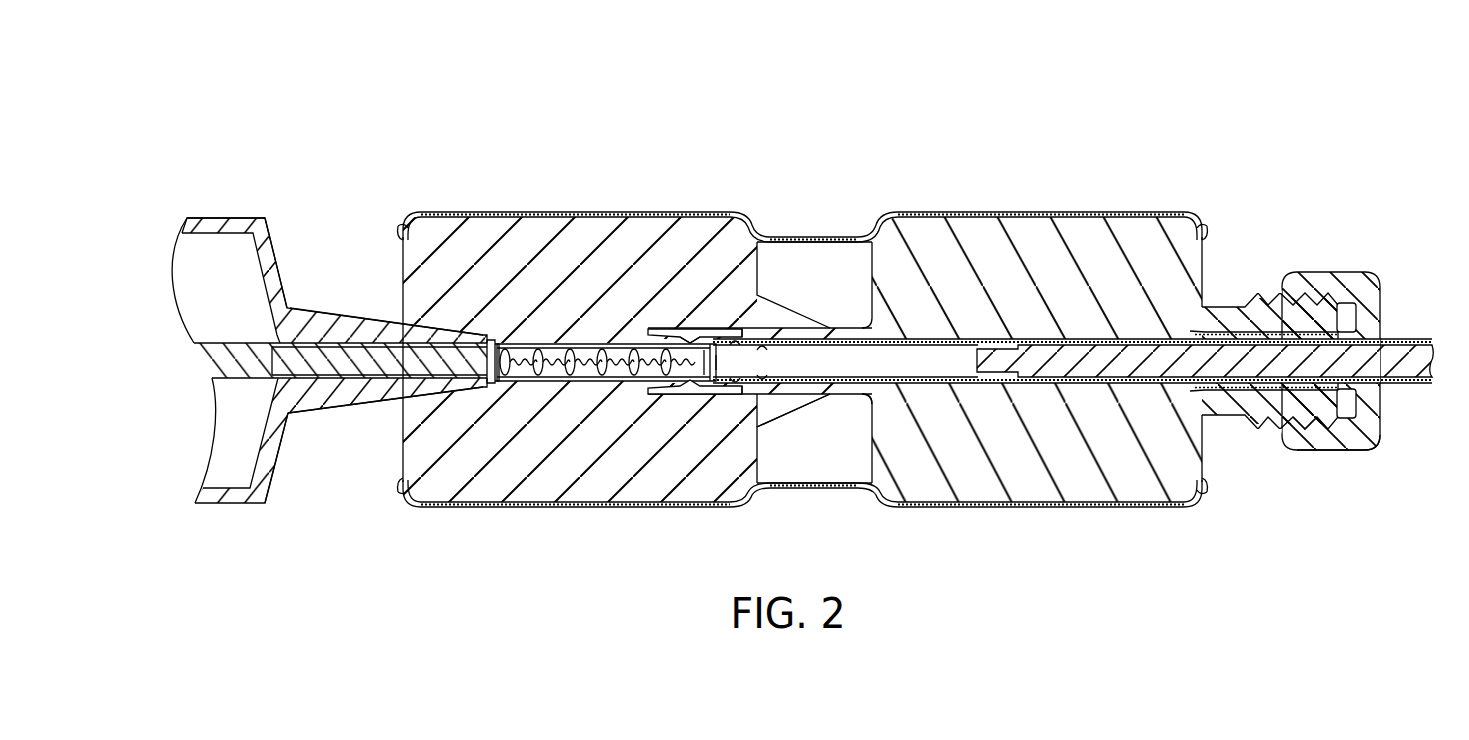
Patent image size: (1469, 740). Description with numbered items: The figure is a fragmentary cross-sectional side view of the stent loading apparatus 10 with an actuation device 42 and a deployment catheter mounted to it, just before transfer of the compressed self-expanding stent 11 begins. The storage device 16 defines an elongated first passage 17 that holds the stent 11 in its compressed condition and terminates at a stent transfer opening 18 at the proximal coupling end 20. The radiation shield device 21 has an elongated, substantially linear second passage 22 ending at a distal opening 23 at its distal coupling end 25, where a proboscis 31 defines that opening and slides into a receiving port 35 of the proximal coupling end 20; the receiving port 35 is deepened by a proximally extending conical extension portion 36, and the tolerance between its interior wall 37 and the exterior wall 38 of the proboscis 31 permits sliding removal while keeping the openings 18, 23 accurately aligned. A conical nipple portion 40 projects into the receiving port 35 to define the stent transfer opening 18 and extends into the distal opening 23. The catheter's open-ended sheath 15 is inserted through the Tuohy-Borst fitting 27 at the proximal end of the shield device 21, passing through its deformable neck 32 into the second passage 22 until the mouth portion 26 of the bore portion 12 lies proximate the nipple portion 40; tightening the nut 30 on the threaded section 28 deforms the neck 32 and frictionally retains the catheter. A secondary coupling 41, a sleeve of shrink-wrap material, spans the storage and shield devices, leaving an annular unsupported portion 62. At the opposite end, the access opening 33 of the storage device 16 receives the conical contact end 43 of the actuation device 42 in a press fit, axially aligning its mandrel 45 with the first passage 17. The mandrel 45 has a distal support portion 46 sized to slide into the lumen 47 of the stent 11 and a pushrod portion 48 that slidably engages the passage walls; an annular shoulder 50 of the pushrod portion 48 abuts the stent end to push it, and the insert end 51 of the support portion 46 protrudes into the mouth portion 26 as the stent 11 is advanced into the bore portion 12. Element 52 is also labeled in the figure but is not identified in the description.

The stent loading apparatus 10 is at (990, 90).
The self-expanding stent 11 is at (550, 330).
The bore portion 12 is at (1403, 328).
The distal tube or sheath 15 is at (883, 335).
The storage device 16 is at (396, 232).
The first passage 17 is at (617, 343).
The stent transfer opening 18 is at (698, 386).
The proximal coupling end 20 is at (658, 328).
The radiation shield device 21 is at (1210, 257).
The second passage 22 is at (950, 378).
The distal opening 23 is at (732, 330).
The distal coupling end 25 is at (756, 408).
The mouth portion 26 is at (752, 392).
The Tuohy-Borst fitting 27 is at (1356, 463).
The threaded section 28 is at (1270, 296).
The nut 30 is at (1352, 272).
The proboscis 31 is at (683, 395).
The deformable neck 32 is at (1283, 392).
The access opening 33 is at (405, 400).
The receiving port 35 is at (795, 338).
The extension portion 36 is at (795, 395).
The interior wall 37 is at (840, 392).
The exterior wall 38 is at (805, 395).
The nipple portion 40 is at (685, 312).
The secondary coupling 41 is at (501, 204).
The actuation device 42 is at (229, 210).
The contact end 43 is at (392, 254).
The mandrel 45 is at (236, 392).
The support portion 46 is at (330, 335).
The lumen 47 is at (502, 382).
The pushrod portion 48 is at (226, 342).
The annular shoulder 50 is at (272, 415).
The insert end 51 is at (495, 372).
The cap top wall 52 is at (214, 220).
The annular unsupported portion 62 is at (844, 237).